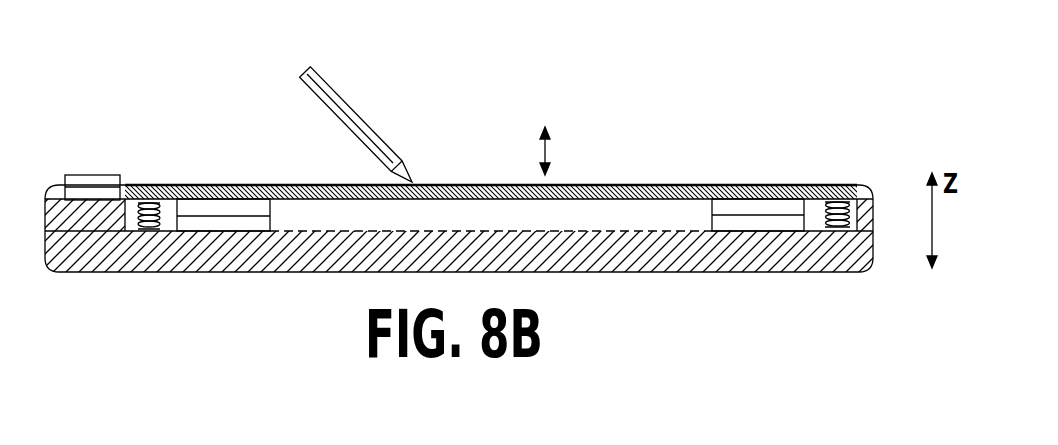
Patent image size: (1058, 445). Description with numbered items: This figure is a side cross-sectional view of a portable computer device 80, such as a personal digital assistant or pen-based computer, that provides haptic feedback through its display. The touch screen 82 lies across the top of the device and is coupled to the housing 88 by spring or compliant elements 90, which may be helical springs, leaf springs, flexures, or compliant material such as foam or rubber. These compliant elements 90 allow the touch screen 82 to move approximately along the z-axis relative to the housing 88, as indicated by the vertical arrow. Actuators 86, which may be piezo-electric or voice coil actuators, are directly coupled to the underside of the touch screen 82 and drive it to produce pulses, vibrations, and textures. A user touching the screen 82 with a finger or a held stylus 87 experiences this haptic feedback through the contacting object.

The computer device 80 is at (182, 84).
The touch screen 82 is at (607, 174).
The actuator 86 is at (211, 207).
The stylus 87 is at (352, 113).
The housing 88 is at (463, 254).
The spring or compliant element 90 is at (159, 184).